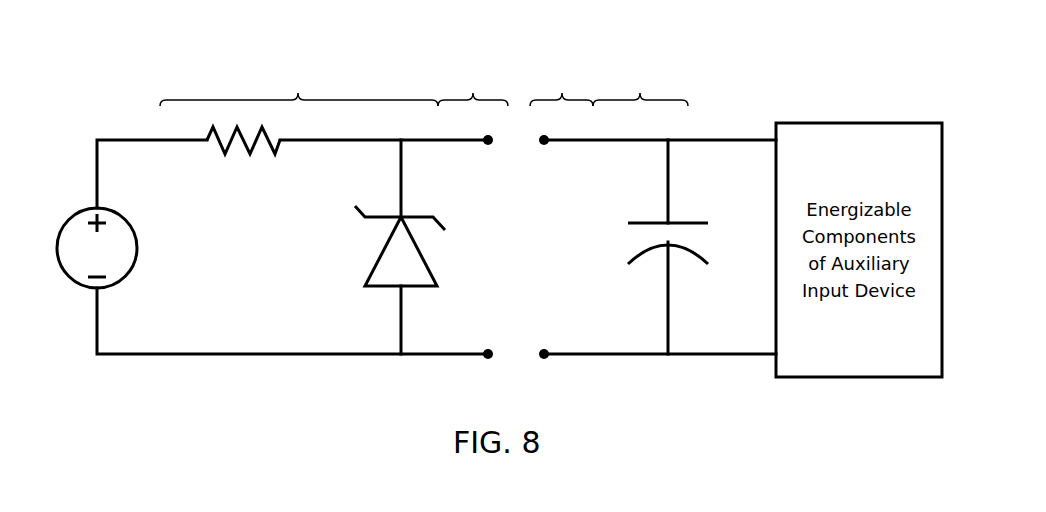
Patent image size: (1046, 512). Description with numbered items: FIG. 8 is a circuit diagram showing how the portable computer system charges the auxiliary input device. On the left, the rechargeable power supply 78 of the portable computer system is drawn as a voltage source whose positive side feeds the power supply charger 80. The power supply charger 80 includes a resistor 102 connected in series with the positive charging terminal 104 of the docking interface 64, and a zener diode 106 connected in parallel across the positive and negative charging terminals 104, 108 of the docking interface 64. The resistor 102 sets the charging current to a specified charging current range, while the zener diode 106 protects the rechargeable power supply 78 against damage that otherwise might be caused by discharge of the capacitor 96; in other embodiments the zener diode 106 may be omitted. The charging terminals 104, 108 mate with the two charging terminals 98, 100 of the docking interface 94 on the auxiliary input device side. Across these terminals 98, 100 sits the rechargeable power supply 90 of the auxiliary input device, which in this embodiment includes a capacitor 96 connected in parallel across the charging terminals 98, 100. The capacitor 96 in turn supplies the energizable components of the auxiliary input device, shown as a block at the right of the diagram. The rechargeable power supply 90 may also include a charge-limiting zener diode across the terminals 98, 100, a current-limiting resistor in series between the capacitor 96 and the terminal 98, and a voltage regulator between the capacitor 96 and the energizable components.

The rechargeable power supply 78 is at (138, 241).
The power supply charger 80 is at (223, 98).
The docking interface 64 is at (485, 96).
The docking interface 94 is at (572, 96).
The rechargeable power supply 90 is at (658, 96).
The resistor 102 is at (245, 152).
The zener diode 106 is at (423, 262).
The positive charging terminal 104 is at (490, 146).
The charging terminal 98 is at (546, 146).
The negative charging terminal 108 is at (496, 330).
The charging terminal 100 is at (551, 330).
The capacitor 96 is at (697, 222).